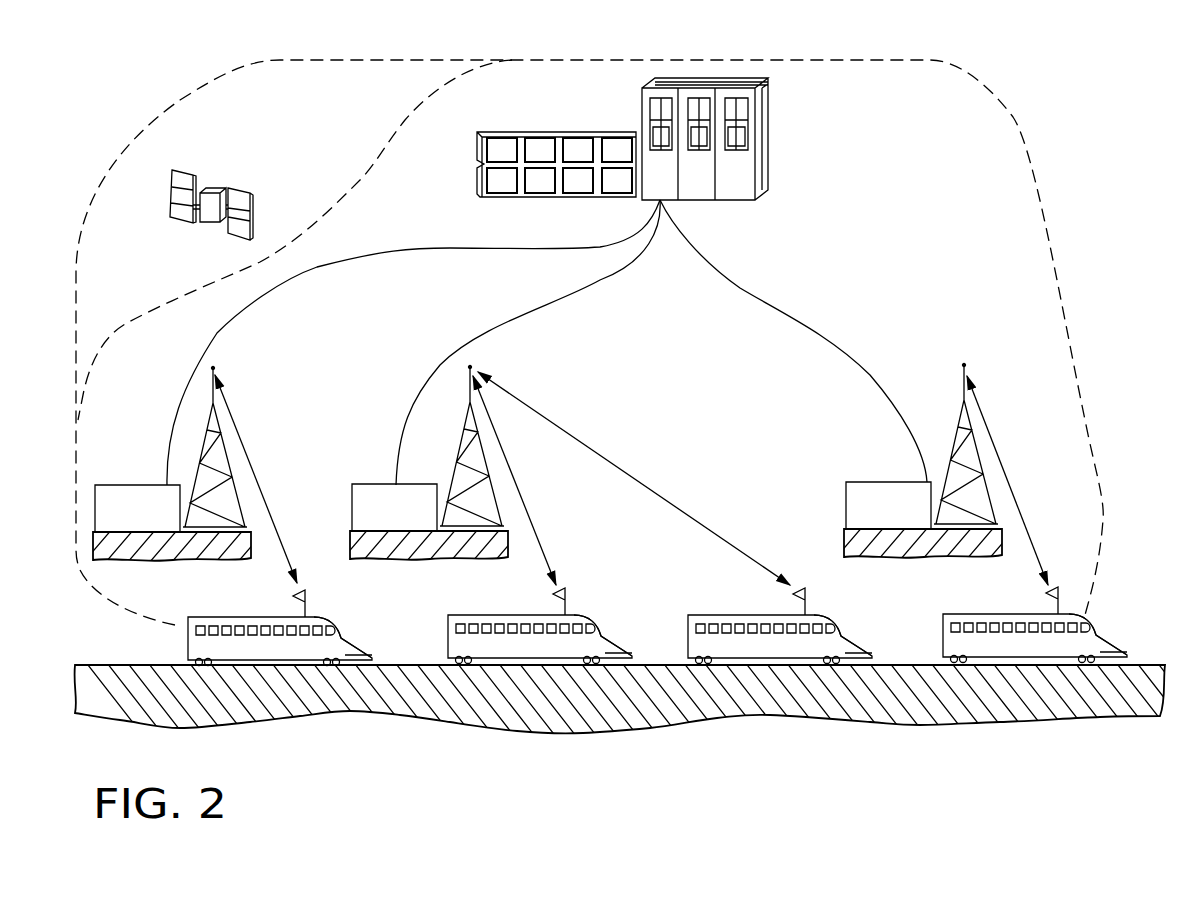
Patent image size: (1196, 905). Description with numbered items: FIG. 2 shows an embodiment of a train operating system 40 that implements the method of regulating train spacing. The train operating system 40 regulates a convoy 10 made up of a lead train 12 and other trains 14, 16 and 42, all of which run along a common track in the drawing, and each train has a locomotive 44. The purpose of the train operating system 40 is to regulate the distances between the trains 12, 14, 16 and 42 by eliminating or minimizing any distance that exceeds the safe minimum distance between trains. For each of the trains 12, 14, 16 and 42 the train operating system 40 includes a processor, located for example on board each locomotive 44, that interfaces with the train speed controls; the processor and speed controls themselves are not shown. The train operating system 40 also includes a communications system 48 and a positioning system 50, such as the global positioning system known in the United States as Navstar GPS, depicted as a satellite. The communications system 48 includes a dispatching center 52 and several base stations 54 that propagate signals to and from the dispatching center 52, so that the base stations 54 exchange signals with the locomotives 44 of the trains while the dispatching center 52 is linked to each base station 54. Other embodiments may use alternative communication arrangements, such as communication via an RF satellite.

The convoy 10 is at (1132, 594).
The lead train 12 is at (1040, 612).
The train 14 is at (752, 615).
The train 16 is at (512, 615).
The train operating system 40 is at (160, 104).
The train 42 is at (240, 617).
The locomotive 44 is at (355, 640).
The communications system 48 is at (372, 158).
The positioning system 50 is at (212, 188).
The dispatching center 52 is at (770, 110).
The base station 54 is at (152, 485).